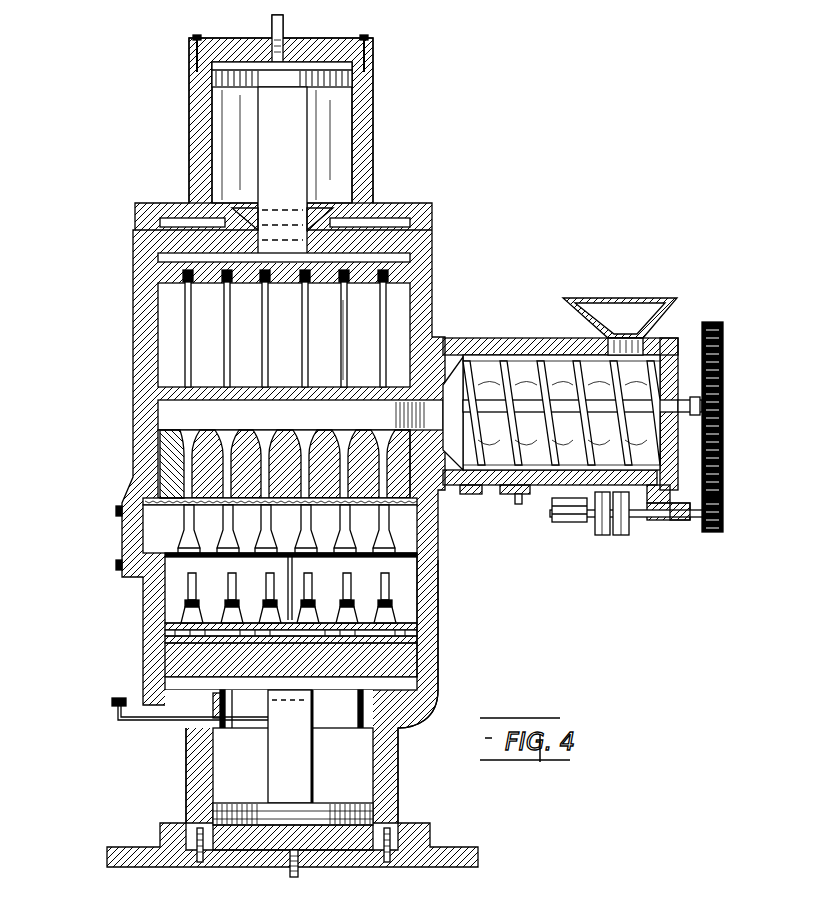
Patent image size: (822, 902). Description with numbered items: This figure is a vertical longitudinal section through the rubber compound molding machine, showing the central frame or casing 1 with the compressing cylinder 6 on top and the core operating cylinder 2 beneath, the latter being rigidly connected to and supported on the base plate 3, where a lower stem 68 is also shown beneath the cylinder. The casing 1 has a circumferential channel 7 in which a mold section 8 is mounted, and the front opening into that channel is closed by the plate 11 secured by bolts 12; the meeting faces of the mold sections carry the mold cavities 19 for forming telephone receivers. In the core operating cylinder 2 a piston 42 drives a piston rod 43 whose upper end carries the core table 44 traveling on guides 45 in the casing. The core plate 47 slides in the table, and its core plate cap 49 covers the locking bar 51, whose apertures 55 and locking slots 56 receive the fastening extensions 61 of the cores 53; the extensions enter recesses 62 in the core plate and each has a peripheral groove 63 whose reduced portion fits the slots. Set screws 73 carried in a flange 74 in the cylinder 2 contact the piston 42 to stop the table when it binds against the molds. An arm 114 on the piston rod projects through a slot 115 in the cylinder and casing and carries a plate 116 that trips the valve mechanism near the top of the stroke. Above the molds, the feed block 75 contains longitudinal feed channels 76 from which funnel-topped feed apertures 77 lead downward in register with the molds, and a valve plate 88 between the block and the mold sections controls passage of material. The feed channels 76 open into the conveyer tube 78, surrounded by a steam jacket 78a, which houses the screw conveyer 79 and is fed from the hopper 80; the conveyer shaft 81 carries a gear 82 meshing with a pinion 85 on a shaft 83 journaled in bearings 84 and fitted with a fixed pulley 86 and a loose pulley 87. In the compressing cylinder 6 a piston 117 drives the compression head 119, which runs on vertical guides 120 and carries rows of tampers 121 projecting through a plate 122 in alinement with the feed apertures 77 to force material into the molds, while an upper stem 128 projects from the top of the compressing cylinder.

The central frame or casing 1 is at (134, 366).
The core operating cylinder 2 is at (396, 750).
The base plate 3 is at (448, 847).
The compressing cylinder 6 is at (372, 150).
The circumferential channel 7 is at (445, 546).
The mold section 8 is at (440, 580).
The plate 11 is at (308, 160).
The bolts 12 is at (118, 510).
The molds or mold cavities 19 is at (232, 555).
The piston 42 is at (334, 850).
The piston rod 43 is at (316, 790).
The core table 44 is at (170, 660).
The guides 45 is at (296, 563).
The core plate 47 is at (228, 692).
The core plate cap 49 is at (168, 615).
The locking bar 51 is at (170, 636).
The cores 53 is at (222, 612).
The apertures 55 is at (420, 648).
The locking slot 56 is at (348, 690).
The fastening extensions 61 is at (220, 678).
The recesses 62 is at (245, 668).
The peripheral groove 63 is at (445, 690).
The lower stem 68 is at (289, 868).
The set screws 73 is at (226, 742).
The flange 74 is at (230, 722).
The feed block or head 75 is at (168, 472).
The feed channels 76 is at (190, 410).
The feed apertures 77 is at (276, 450).
The conveyer tube 78 is at (482, 346).
The steam jacket 78a is at (472, 346).
The screw conveyer 79 is at (552, 346).
The hopper 80 is at (628, 300).
The conveyer shaft 81 is at (700, 398).
The gear 82 is at (724, 428).
The shaft 83 is at (640, 522).
The bearings 84 is at (568, 522).
The pinion 85 is at (724, 514).
The fixed pulley 86 is at (603, 536).
The loose pulley 87 is at (621, 536).
The valve plate 88 is at (452, 520).
The arm 114 is at (124, 724).
The slot 115 is at (165, 681).
The plate 116 is at (112, 706).
The piston 117 is at (356, 80).
The compression plate or head 119 is at (420, 262).
The vertical guides 120 is at (287, 330).
The tampers 121 is at (344, 320).
The plate 122 is at (345, 400).
The stem 128 is at (284, 30).